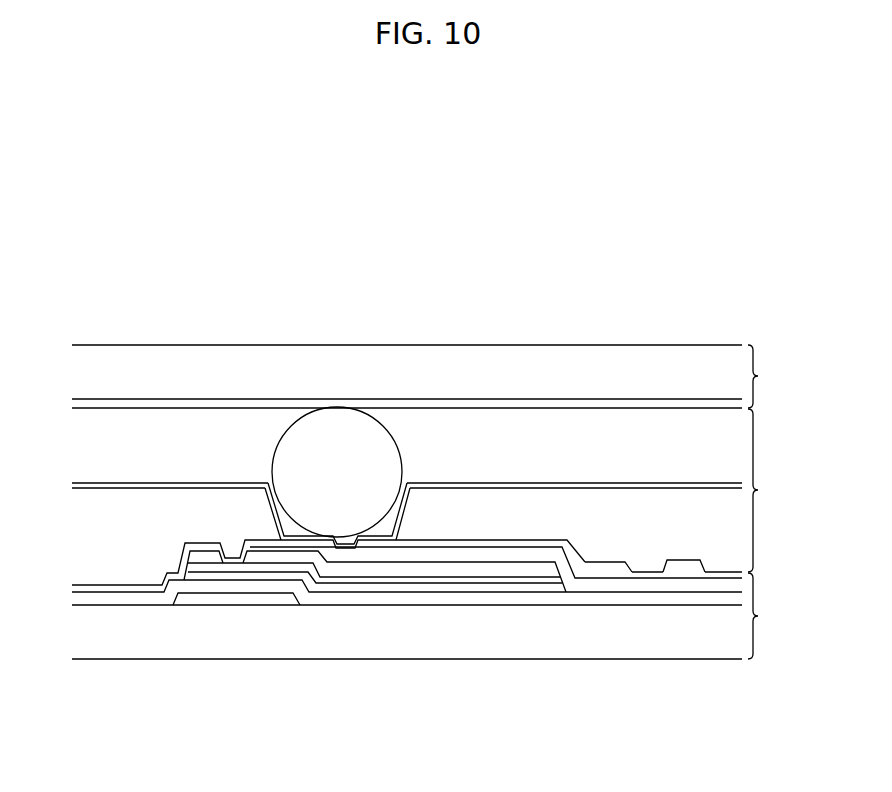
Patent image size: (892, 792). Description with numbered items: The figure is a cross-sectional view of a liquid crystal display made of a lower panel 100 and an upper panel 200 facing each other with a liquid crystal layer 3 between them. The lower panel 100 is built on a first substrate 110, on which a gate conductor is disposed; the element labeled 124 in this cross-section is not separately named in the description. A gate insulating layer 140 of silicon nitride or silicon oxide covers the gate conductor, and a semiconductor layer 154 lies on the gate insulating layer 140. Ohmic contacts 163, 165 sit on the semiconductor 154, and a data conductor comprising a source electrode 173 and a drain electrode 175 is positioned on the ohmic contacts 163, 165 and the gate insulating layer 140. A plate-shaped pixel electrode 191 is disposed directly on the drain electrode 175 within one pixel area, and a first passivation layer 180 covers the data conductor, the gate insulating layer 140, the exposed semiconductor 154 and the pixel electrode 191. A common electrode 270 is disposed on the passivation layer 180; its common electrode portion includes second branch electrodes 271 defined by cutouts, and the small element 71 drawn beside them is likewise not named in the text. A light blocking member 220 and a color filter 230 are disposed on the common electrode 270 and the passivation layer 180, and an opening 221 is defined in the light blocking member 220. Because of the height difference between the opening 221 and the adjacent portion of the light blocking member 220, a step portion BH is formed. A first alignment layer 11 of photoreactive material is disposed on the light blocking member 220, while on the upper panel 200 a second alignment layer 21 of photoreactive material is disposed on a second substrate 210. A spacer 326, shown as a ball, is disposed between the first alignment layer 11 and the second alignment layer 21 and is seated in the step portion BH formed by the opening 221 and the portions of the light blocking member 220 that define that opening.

The second substrate 210 is at (600, 368).
The second alignment layer 21 is at (545, 404).
The upper panel 200 is at (772, 376).
The liquid crystal layer 3 is at (761, 490).
The lower panel 100 is at (772, 616).
The light blocking member 220 is at (118, 557).
The color filter 230 is at (630, 505).
The first alignment layer 11 is at (588, 481).
The spacer 326 is at (338, 438).
The opening 221 is at (276, 508).
The first substrate 110 is at (652, 640).
The gate electrode 124 is at (265, 598).
The gate insulating layer 140 is at (318, 597).
The semiconductor layer 154 is at (393, 585).
The ohmic contact 163 is at (193, 563).
The ohmic contact 165 is at (430, 573).
The source electrode 173 is at (212, 557).
The drain electrode 175 is at (473, 568).
The pixel electrode 191 is at (535, 553).
The first passivation layer 180 is at (589, 572).
The common electrode 270 is at (610, 567).
The second branch electrode 271 is at (688, 565).
The protrusion 71 is at (682, 591).
The step portion BH is at (379, 542).